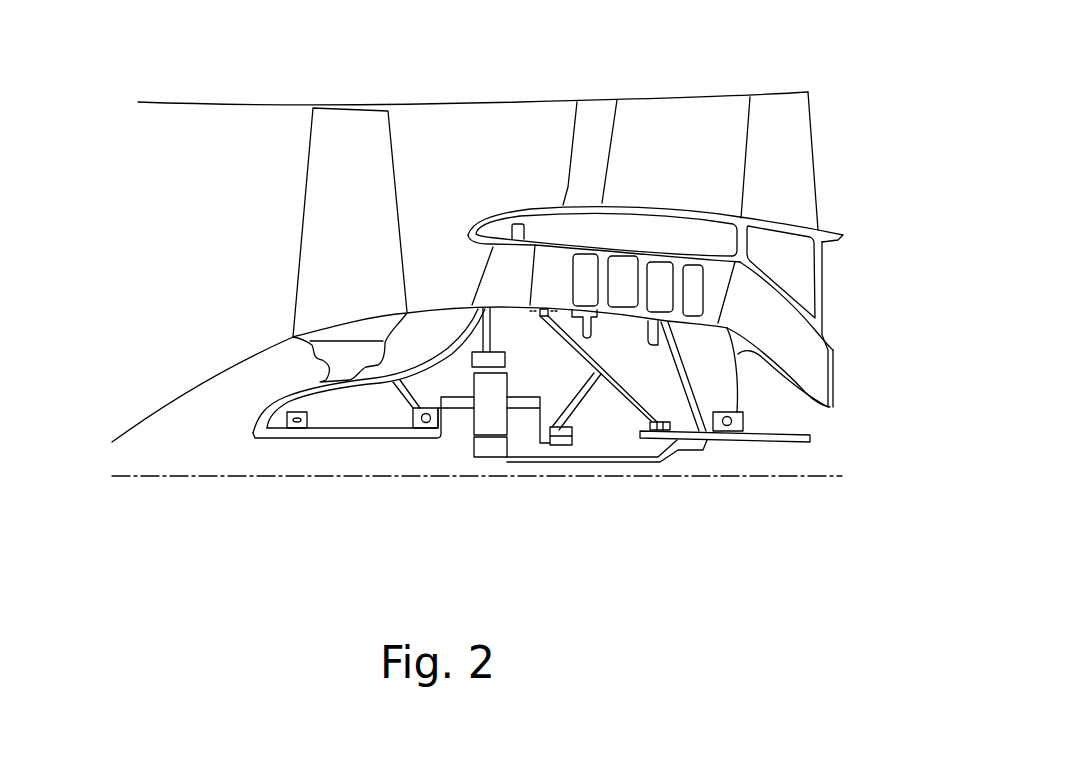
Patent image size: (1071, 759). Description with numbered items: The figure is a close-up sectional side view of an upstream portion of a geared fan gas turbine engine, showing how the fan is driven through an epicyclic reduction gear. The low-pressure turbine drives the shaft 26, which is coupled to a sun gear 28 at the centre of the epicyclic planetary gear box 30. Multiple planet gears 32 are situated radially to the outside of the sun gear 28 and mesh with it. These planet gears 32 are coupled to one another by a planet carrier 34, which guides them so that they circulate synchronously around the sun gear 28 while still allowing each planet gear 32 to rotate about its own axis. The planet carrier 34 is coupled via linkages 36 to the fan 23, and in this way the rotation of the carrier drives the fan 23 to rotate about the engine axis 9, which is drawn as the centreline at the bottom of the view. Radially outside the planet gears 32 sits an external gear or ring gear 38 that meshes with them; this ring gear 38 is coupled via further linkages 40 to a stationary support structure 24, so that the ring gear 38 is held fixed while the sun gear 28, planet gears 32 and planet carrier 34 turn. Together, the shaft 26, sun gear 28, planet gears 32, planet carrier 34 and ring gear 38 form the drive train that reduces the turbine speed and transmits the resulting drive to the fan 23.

The engine axis 9 is at (282, 474).
The fan 23 is at (318, 225).
The stationary support structure 24 is at (497, 270).
The shaft 26 is at (627, 460).
The sun gear 28 is at (493, 450).
The epicyclic planetary gear box 30 is at (452, 416).
The planet gears 32 is at (473, 437).
The planet carrier 34 is at (527, 435).
The linkages 36 is at (447, 440).
The ring gear 38 is at (472, 360).
The linkages 40 is at (492, 337).